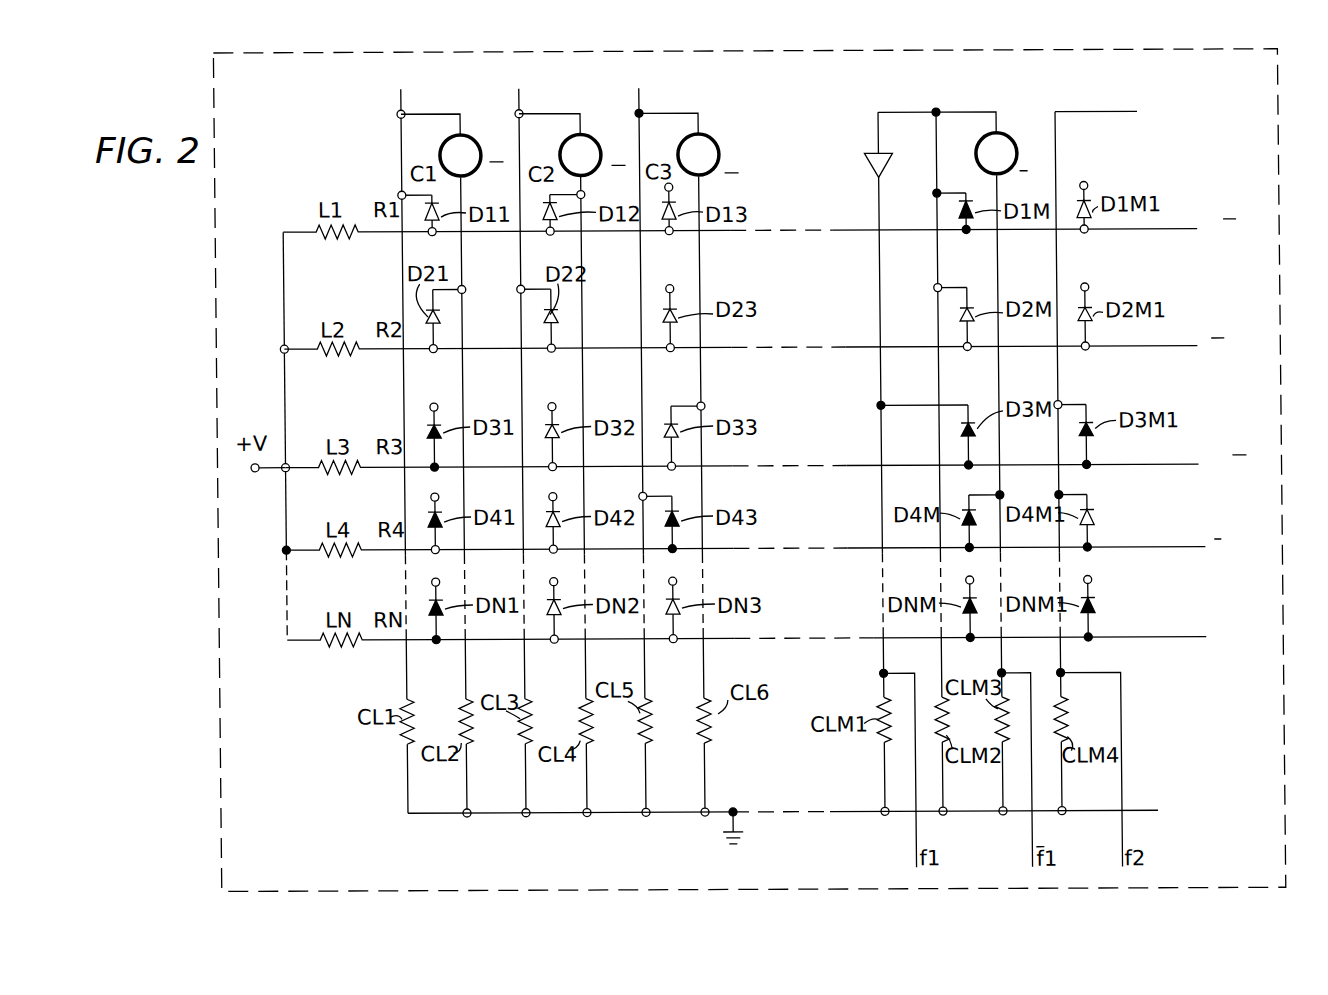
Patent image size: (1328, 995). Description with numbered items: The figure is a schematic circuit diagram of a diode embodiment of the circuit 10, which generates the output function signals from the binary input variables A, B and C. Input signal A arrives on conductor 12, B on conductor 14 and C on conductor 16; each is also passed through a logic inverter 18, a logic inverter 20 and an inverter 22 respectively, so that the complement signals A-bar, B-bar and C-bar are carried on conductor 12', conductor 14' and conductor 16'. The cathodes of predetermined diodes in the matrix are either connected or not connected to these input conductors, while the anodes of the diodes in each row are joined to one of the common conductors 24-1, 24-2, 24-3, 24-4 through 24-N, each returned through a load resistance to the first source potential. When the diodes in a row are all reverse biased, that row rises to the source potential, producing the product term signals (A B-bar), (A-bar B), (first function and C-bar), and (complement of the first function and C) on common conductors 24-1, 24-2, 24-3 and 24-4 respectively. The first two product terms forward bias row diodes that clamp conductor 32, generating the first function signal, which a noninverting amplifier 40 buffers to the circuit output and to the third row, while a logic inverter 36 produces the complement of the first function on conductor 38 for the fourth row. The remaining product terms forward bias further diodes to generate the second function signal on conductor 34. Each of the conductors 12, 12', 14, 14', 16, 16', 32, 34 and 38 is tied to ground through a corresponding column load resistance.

The circuit 10 is at (1278, 140).
The conductor 12 is at (380, 439).
The conductor 14 is at (504, 441).
The conductor 16 is at (654, 441).
The logic inverter 18 is at (463, 136).
The logic inverter 20 is at (583, 136).
The inverter 22 is at (715, 140).
The conductor 12' is at (484, 489).
The conductor 14' is at (606, 490).
The conductor 16' is at (727, 494).
The conductor 32 is at (937, 150).
The conductor 34 is at (1057, 280).
The logic inverter 36 is at (1012, 146).
The conductor 38 is at (997, 280).
The noninverting amplifier 40 is at (868, 152).
The common conductor 24-1 is at (1186, 240).
The common conductor 24-2 is at (1184, 356).
The common conductor 24-3 is at (1190, 474).
The common conductor 24-4 is at (1188, 550).
The common conductor 24-N is at (1198, 640).